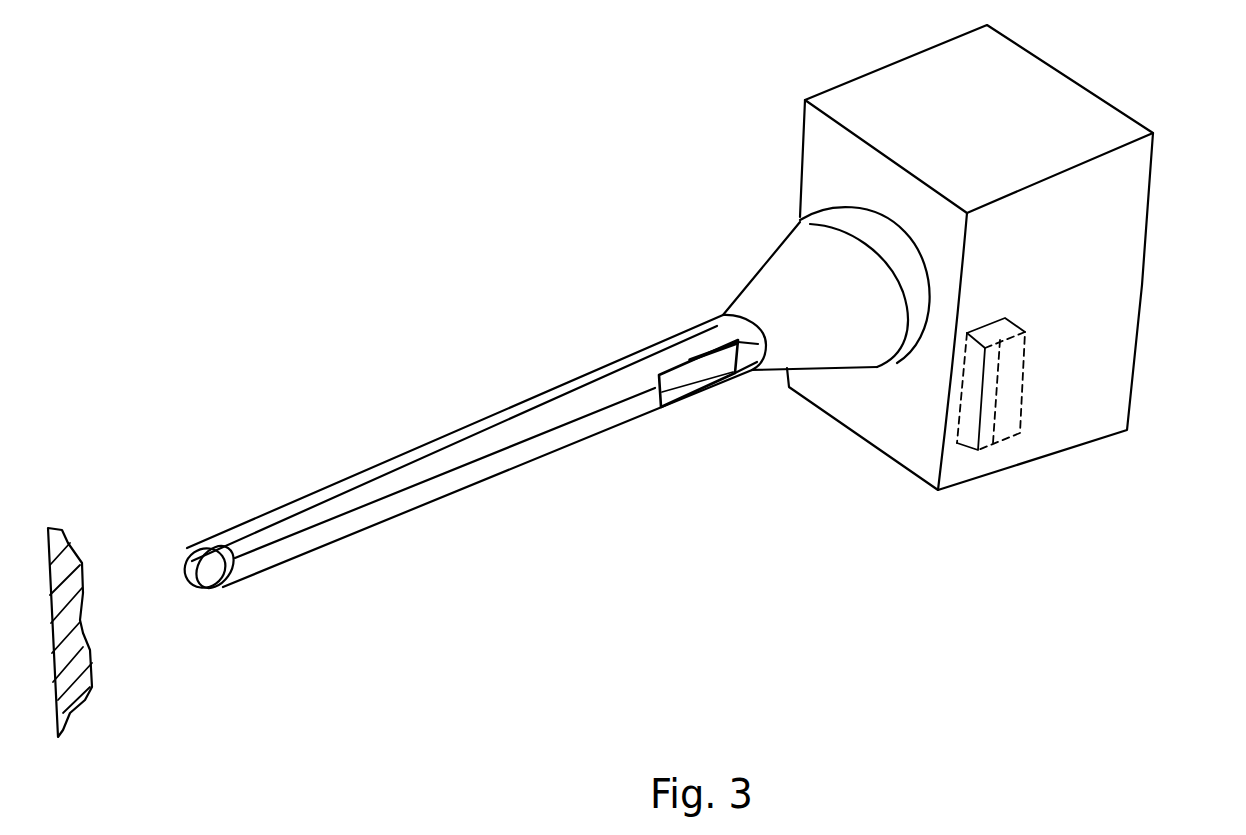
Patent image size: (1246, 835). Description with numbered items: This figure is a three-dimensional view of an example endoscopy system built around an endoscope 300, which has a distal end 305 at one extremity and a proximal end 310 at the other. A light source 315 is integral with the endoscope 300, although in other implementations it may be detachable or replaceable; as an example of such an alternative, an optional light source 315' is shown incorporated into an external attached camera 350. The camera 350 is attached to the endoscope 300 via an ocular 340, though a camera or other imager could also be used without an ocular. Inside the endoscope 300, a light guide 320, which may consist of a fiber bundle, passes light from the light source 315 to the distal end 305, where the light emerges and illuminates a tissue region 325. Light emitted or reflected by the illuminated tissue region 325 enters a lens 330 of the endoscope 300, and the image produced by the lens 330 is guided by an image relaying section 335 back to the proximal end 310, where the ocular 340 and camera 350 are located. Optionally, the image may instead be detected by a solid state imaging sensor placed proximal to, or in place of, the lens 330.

The endoscope 300 is at (648, 572).
The distal end 305 is at (201, 589).
The proximal end 310 is at (755, 372).
The light source 315 is at (698, 416).
The optional light source 315' is at (991, 436).
The light guide 320 is at (477, 472).
The tissue region 325 is at (87, 700).
The lens 330 is at (186, 552).
The image relaying section 335 is at (452, 437).
The ocular 340 is at (769, 258).
The camera 350 is at (1155, 195).